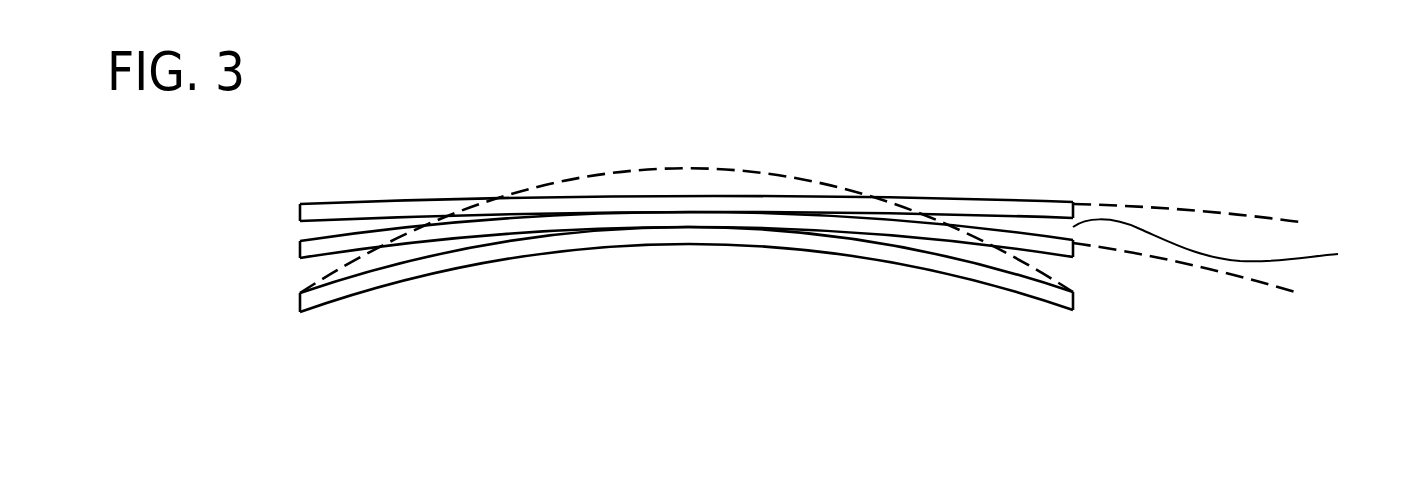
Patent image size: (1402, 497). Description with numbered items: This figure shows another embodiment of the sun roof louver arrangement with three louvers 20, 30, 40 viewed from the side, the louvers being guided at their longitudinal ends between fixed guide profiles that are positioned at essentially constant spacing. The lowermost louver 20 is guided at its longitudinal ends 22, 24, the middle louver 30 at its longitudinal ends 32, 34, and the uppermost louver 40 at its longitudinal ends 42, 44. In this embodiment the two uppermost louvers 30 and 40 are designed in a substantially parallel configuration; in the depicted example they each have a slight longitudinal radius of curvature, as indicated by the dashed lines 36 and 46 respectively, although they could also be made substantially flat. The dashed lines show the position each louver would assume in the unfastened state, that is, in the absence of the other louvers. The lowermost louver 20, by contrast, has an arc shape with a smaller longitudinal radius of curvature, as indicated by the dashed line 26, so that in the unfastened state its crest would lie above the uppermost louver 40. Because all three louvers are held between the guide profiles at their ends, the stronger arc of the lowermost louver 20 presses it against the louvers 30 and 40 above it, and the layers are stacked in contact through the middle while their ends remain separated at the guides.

The louver 20 is at (1033, 291).
The longitudinal end of louver 22 is at (293, 304).
The longitudinal end of louver 24 is at (1091, 320).
The dashed line 26 is at (771, 173).
The louver 30 is at (839, 240).
The longitudinal end of louver 32 is at (293, 252).
The longitudinal end of louver 34 is at (1101, 272).
The dashed line 36 is at (1247, 278).
The louver 40 is at (969, 210).
The longitudinal end of louver 42 is at (287, 211).
The longitudinal end of louver 44 is at (1089, 187).
The dashed line 46 is at (1195, 208).